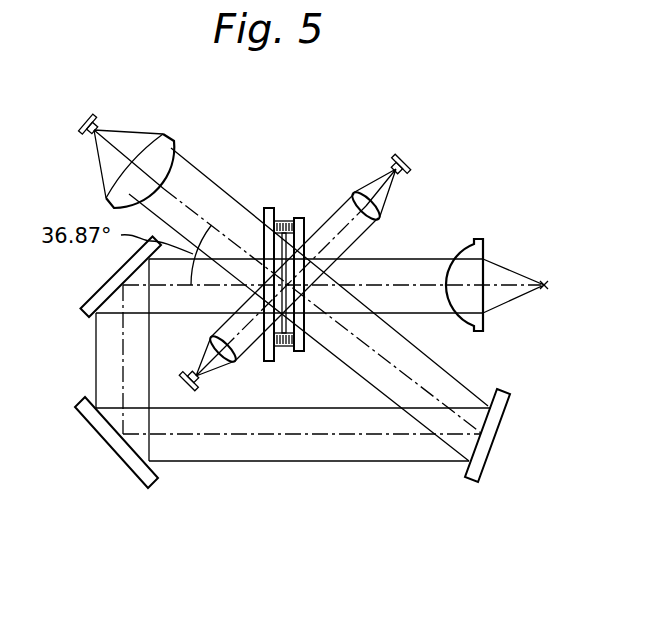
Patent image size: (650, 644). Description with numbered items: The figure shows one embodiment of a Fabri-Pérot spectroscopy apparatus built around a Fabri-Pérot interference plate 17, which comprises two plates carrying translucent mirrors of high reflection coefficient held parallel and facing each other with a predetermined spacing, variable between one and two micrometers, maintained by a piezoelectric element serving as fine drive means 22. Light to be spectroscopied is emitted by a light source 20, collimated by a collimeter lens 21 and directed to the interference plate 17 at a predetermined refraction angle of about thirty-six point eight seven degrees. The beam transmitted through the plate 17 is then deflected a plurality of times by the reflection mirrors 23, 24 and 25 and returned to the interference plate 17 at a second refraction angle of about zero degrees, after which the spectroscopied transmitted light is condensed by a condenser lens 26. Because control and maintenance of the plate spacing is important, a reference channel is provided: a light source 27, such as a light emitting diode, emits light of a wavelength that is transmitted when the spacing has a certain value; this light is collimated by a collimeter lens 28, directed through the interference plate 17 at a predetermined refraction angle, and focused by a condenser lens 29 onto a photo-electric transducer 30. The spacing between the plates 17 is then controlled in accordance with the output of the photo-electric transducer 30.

The Fabri-Pérot interference plate 17 is at (268, 207).
The light source 20 is at (94, 122).
The collimeter lens 21 is at (174, 148).
The fine drive means 22 is at (288, 346).
The reflection mirror 23 is at (492, 430).
The reflection mirror 24 is at (124, 451).
The reflection mirror 25 is at (86, 300).
The condenser lens 26 is at (484, 244).
The light source 27 is at (198, 388).
The collimeter lens 28 is at (210, 340).
The condenser lens 29 is at (380, 216).
The photo-electric transducer 30 is at (412, 170).